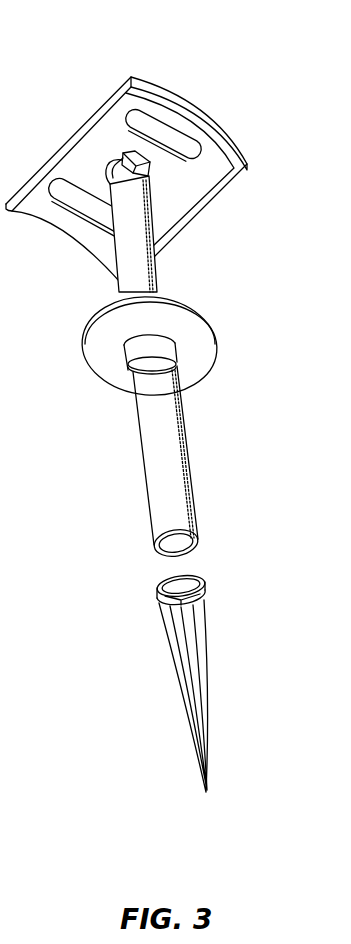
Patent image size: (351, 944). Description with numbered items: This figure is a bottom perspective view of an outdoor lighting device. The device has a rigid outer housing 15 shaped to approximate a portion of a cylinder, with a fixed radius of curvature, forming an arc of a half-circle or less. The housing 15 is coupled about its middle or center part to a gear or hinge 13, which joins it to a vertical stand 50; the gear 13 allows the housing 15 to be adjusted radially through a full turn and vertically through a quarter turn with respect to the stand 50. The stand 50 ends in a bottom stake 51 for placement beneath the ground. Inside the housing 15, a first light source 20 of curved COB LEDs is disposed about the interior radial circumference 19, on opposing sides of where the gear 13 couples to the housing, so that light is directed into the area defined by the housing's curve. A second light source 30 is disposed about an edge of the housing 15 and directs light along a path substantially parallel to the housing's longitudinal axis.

The rigid outer housing 15 is at (72, 145).
The second light source 30 is at (172, 90).
The first light source 20 is at (176, 137).
The gear or hinge 13 is at (143, 172).
The interior radial circumference 19 is at (175, 190).
The vertical stand 50 is at (155, 449).
The bottom stake 51 is at (183, 668).